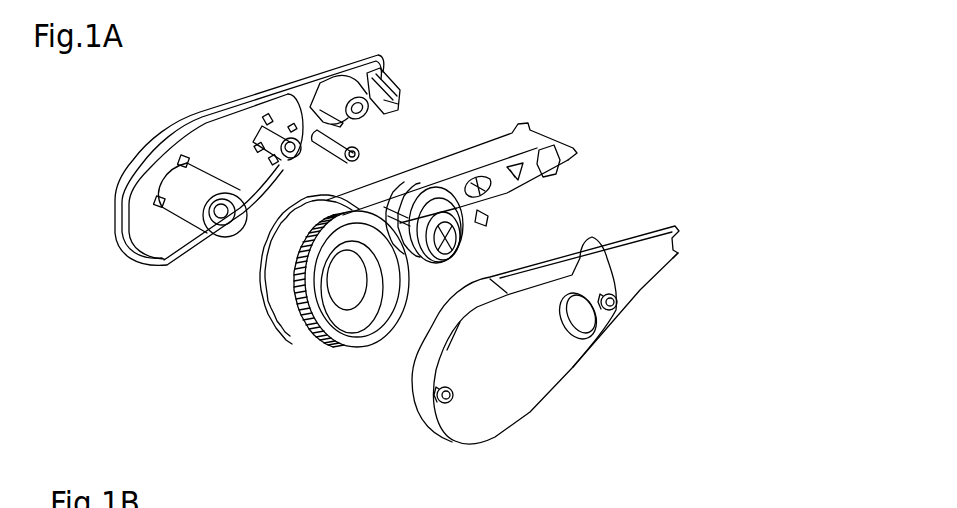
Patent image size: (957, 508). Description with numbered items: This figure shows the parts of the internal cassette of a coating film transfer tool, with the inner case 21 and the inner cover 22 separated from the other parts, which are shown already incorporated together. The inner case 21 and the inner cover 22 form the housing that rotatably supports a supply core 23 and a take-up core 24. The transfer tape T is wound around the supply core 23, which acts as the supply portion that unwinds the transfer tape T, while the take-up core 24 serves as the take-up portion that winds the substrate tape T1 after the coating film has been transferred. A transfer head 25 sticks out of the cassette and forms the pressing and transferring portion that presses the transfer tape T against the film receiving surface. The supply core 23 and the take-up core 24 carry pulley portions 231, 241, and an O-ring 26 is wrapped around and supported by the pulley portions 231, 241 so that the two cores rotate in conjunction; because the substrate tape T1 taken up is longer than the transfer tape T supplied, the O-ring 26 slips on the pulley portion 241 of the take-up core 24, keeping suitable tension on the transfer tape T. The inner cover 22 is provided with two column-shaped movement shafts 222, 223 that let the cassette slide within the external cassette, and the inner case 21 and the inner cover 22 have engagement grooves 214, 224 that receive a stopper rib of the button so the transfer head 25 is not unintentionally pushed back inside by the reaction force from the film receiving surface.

The inner case 21 is at (153, 132).
The engagement groove 214 is at (262, 200).
The pulley portion 231 is at (280, 320).
The supply core 23 is at (350, 303).
The O-ring 26 is at (395, 207).
The transfer tape T is at (452, 163).
The transfer head 25 is at (445, 178).
The take-up core 24 is at (487, 235).
The pulley portion 241 is at (460, 216).
The substrate tape T1 is at (478, 214).
The inner cover 22 is at (517, 388).
The movement shaft 222 is at (617, 304).
The movement shaft 223 is at (453, 400).
The engagement groove 224 is at (570, 372).